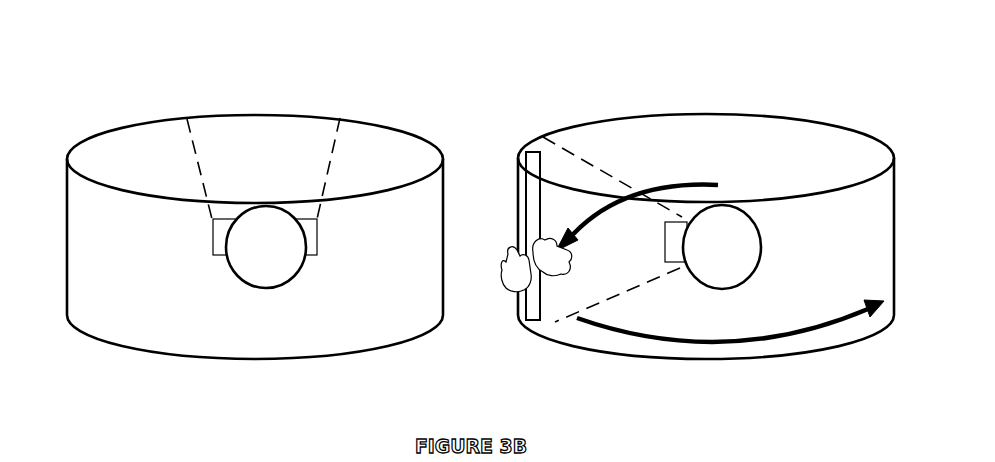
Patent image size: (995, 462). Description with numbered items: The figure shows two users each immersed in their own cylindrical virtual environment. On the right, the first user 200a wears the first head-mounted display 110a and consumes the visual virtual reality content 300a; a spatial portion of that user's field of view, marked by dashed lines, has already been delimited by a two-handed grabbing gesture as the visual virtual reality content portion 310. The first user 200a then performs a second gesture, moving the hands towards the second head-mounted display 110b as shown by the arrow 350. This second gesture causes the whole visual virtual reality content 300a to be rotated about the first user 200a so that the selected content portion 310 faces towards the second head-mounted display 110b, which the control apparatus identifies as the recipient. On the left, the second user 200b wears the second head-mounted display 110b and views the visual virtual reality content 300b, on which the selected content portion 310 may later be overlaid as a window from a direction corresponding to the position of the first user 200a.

The visual virtual reality content 300b is at (365, 118).
The second head-mounted display 110b is at (213, 232).
The second user 200b is at (265, 288).
The visual virtual reality content 300a is at (832, 125).
The visual virtual reality content portion 310 is at (535, 240).
The arrow 350 is at (688, 182).
The first head-mounted display 110a is at (677, 237).
The first user 200a is at (717, 288).